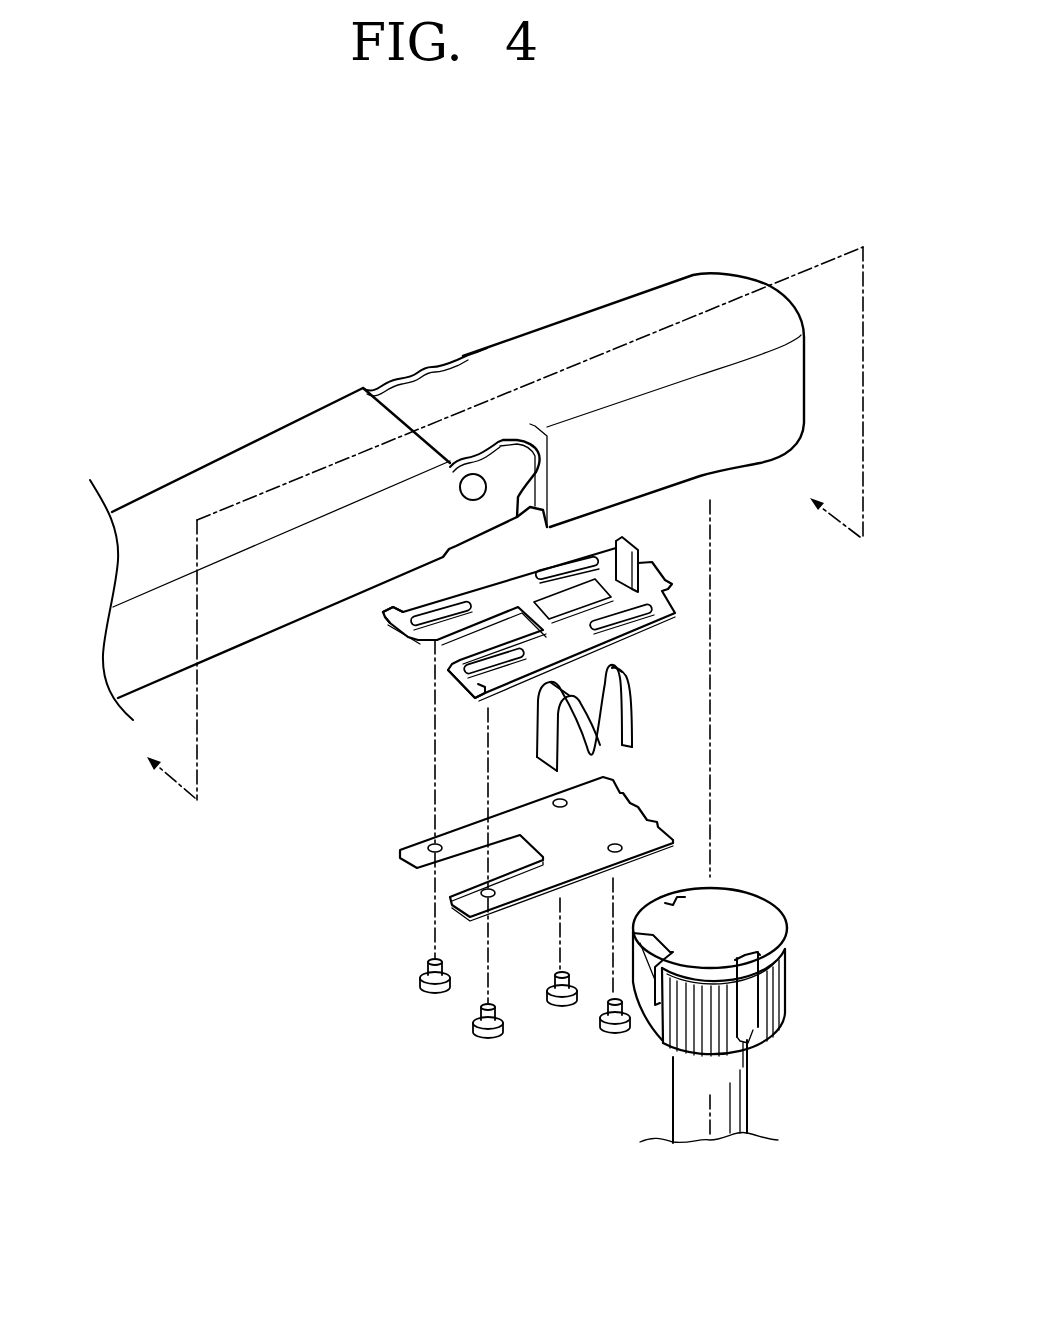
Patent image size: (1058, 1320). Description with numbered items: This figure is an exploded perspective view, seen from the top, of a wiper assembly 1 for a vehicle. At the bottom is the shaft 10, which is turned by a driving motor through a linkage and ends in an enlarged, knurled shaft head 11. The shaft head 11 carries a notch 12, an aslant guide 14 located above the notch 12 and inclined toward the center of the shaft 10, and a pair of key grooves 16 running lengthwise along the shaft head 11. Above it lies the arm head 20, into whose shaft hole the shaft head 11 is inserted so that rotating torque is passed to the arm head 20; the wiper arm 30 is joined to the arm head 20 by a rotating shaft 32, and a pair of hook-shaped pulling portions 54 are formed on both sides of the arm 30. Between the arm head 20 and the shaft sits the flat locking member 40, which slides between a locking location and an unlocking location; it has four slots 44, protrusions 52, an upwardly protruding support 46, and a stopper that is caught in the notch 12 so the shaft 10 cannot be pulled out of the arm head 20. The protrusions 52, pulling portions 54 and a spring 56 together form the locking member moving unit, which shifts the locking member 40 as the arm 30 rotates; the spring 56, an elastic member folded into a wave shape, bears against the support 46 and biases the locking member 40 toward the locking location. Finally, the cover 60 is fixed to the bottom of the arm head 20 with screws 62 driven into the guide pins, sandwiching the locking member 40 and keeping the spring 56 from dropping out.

The wiper assembly 1 is at (249, 322).
The shaft 10 is at (760, 1110).
The shaft head 11 is at (784, 990).
The notch 12 is at (658, 1040).
The aslant guide 14 is at (617, 1033).
The key grooves 16 is at (679, 897).
The arm head 20 is at (631, 340).
The arm 30 is at (291, 456).
The rotating shaft 32 is at (473, 478).
The locking member 40 is at (408, 648).
The slots 44 is at (575, 553).
The support 46 is at (636, 580).
The protrusions 52 is at (385, 617).
The pulling portions 54 is at (536, 490).
The spring 56 is at (636, 708).
The cover 60 is at (605, 810).
The screws 62 is at (483, 1036).